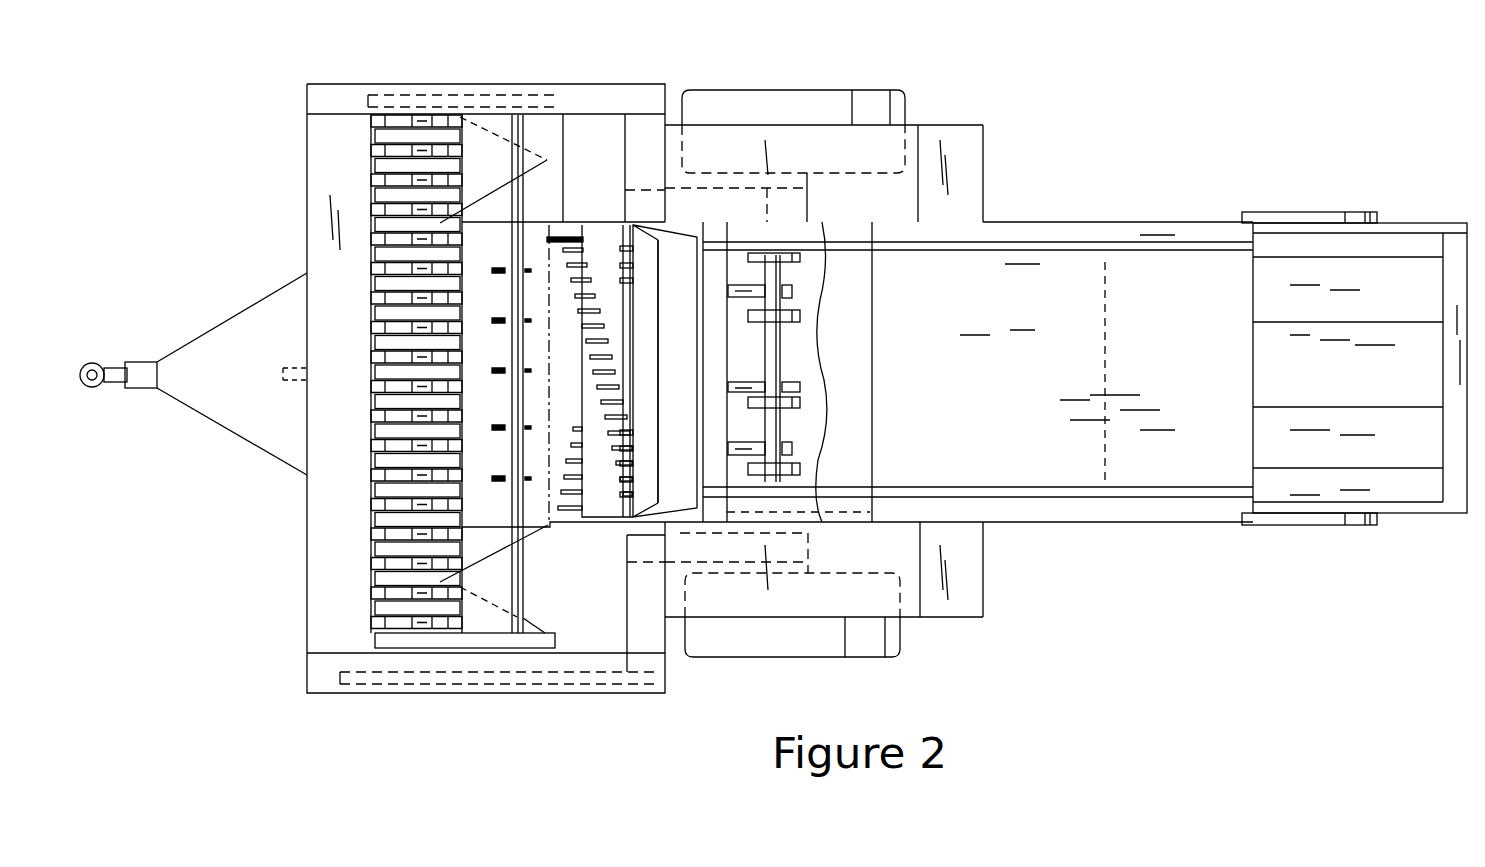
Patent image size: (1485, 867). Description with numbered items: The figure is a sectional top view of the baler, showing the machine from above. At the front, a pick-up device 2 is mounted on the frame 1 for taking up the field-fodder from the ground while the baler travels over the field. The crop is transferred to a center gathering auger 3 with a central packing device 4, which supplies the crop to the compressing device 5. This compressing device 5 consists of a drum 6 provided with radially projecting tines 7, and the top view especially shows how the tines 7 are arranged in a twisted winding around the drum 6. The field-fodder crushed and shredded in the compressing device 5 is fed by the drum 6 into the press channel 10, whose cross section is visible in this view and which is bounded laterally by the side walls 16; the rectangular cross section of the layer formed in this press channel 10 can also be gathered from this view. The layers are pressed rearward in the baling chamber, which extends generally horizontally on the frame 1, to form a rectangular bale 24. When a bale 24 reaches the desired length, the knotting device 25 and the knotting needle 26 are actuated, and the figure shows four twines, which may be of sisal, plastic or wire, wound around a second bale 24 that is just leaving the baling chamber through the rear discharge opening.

The frame 1 is at (232, 343).
The pick-up device 2 is at (378, 260).
The center gathering auger 3 is at (478, 158).
The central packing device 4 is at (480, 443).
The compressing device 5 is at (577, 219).
The drum 6 is at (585, 224).
The tines 7 is at (597, 312).
The press channel 10 is at (686, 366).
The side walls 16 is at (675, 242).
The rectangular bale 24 is at (1058, 268).
The knotting device 25 is at (797, 470).
The knotting needle 26 is at (798, 330).